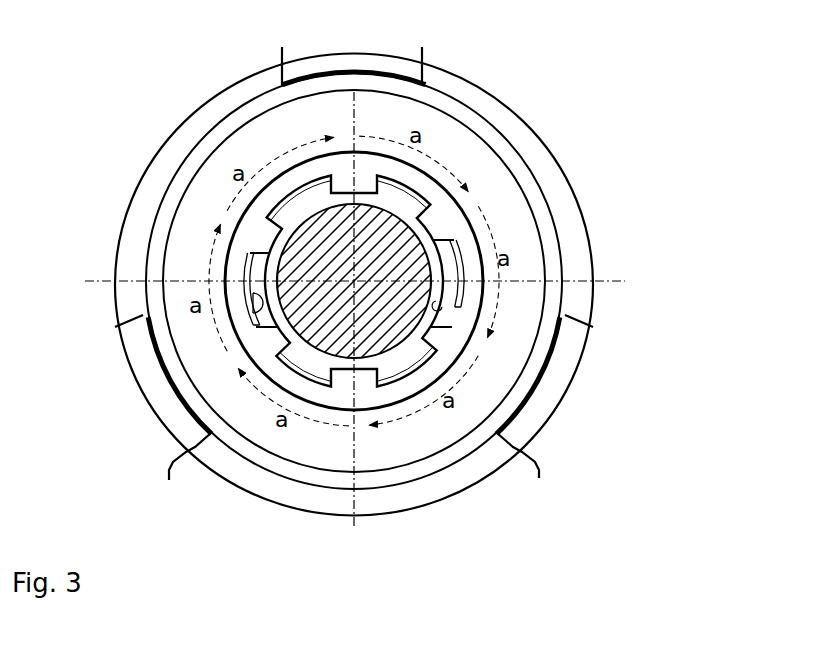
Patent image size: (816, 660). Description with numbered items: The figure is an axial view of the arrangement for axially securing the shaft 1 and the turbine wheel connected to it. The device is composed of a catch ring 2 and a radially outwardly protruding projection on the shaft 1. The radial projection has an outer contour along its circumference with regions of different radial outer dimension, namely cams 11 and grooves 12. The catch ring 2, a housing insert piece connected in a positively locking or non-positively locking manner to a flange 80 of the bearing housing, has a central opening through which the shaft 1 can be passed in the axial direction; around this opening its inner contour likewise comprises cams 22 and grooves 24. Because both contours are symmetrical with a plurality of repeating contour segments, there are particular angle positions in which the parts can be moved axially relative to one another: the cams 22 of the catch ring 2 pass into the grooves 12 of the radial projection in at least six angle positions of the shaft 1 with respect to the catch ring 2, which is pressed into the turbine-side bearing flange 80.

The shaft 1 is at (393, 340).
The catch ring 2 is at (493, 187).
The cams 11 is at (250, 272).
The grooves 12 is at (442, 305).
The cams 22 is at (447, 323).
The grooves 24 is at (264, 293).
The flange 80 is at (408, 60).